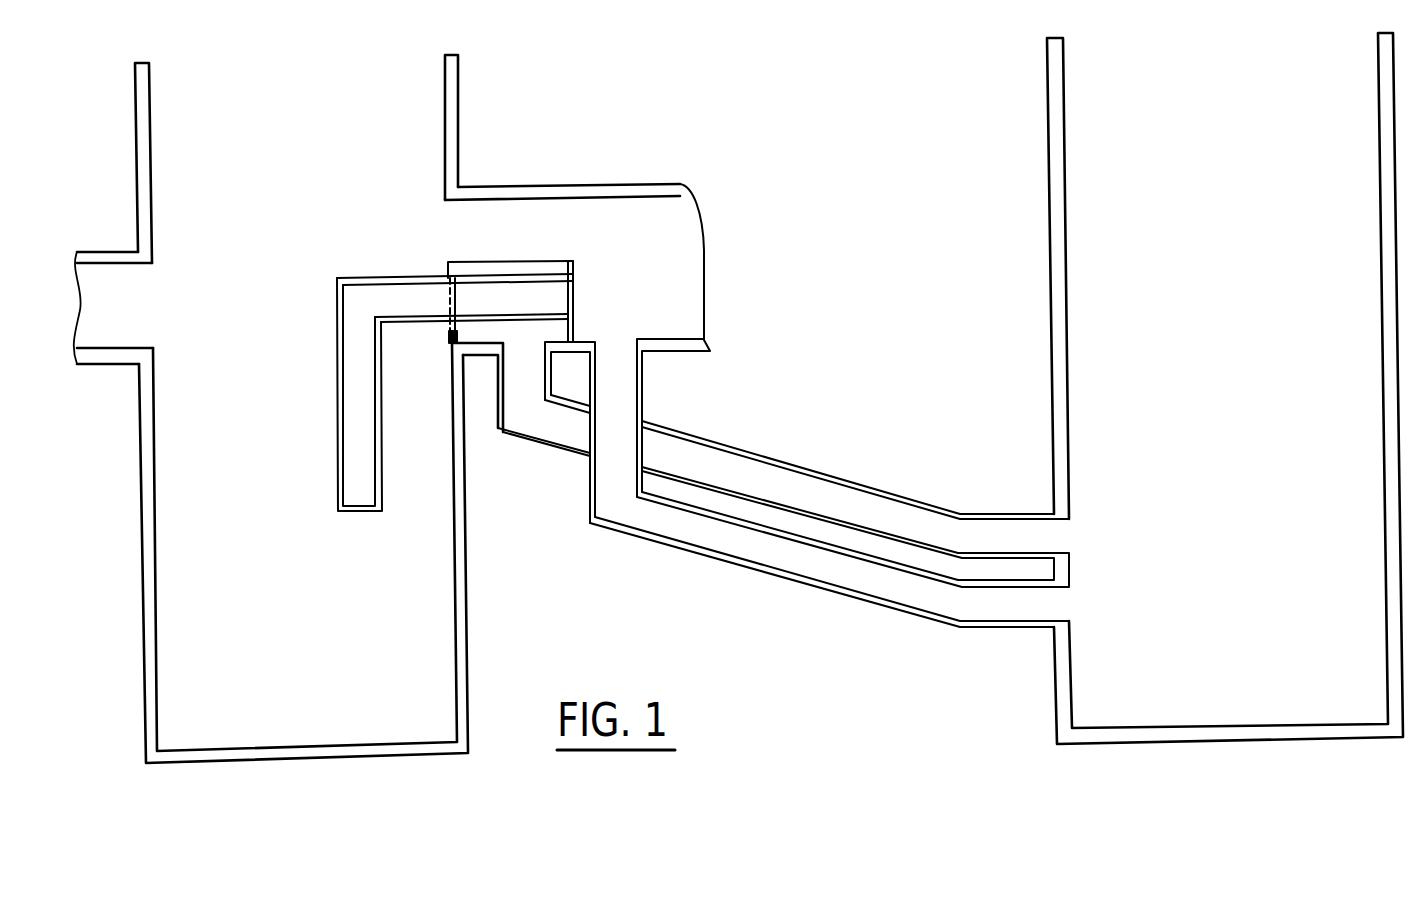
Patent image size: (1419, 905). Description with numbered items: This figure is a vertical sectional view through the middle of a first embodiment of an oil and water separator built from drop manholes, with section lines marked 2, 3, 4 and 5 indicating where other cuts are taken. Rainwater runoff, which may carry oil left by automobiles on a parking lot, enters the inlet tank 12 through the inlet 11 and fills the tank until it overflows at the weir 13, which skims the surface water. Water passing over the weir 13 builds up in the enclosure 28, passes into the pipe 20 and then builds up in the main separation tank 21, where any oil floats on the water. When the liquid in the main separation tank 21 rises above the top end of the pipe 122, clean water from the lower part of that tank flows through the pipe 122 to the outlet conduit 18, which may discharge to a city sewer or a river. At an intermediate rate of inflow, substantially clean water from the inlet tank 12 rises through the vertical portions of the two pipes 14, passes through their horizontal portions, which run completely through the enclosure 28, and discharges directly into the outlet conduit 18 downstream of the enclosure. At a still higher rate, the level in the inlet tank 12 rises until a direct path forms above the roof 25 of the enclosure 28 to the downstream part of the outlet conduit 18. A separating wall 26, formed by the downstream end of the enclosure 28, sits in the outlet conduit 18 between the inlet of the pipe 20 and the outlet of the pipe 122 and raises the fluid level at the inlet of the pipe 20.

The inlet 11 is at (113, 275).
The inlet tank 12 is at (192, 603).
The weir 13 is at (448, 338).
The pipes 14 is at (353, 448).
The outlet conduit 18 is at (660, 142).
The pipe 20 is at (960, 528).
The main separation tank 21 is at (1093, 398).
The roof 25 is at (468, 267).
The wall 26 is at (572, 336).
The enclosure 28 is at (533, 337).
The pipe 122 is at (968, 606).
The section line 2- 2 is at (388, 185).
The section line 3- 3 is at (573, 178).
The section line 4- 4 is at (300, 280).
The section line 5- 5 is at (192, 185).